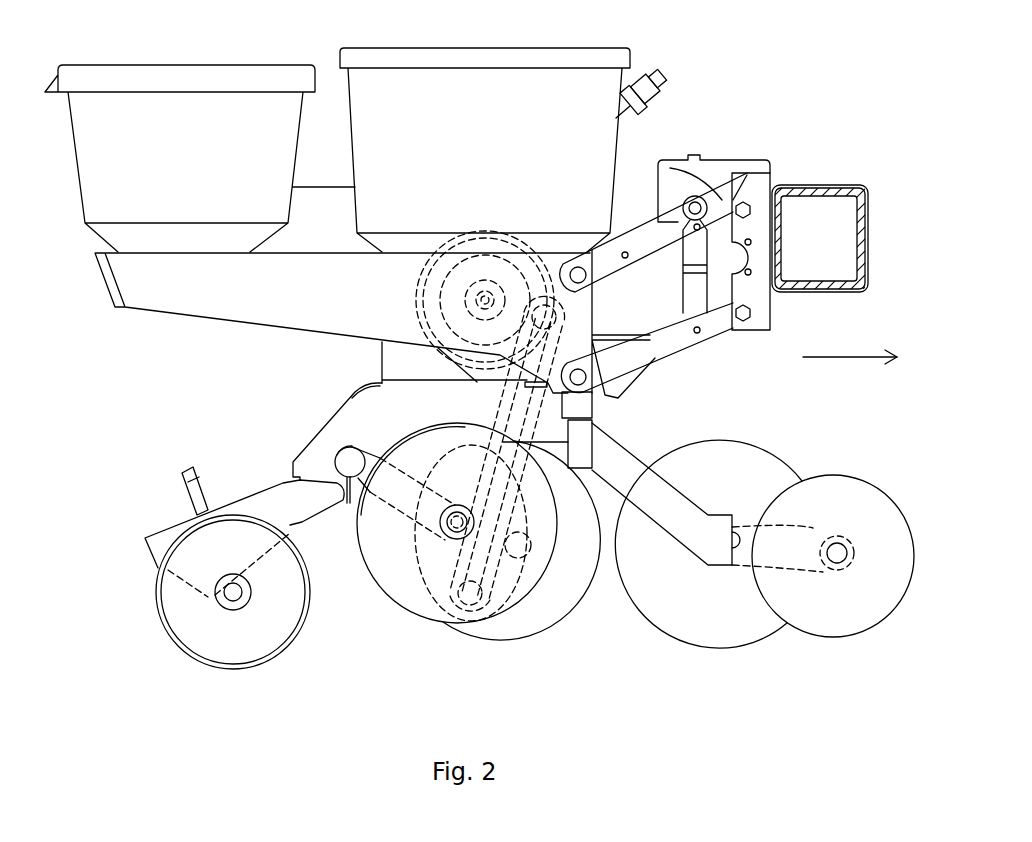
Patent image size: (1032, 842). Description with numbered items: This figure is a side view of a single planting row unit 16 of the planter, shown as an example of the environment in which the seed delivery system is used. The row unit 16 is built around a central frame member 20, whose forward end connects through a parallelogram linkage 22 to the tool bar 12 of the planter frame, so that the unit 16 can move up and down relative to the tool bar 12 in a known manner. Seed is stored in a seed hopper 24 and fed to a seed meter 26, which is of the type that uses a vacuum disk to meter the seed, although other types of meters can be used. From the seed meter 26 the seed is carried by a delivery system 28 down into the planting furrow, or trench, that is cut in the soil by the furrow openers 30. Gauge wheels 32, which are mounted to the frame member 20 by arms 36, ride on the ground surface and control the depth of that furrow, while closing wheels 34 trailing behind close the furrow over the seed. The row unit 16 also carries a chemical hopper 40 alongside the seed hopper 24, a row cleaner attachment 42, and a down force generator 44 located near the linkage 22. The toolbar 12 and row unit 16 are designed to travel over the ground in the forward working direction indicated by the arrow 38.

The tool bar 12 is at (868, 208).
The row unit 16 is at (688, 98).
The central frame member 20 is at (328, 432).
The parallelogram linkage 22 is at (625, 362).
The seed hopper 24 is at (531, 147).
The seed meter 26 is at (523, 243).
The delivery system 28 is at (537, 427).
The furrow openers 30 is at (563, 600).
The gauge wheels 32 is at (402, 585).
The closing wheels 34 is at (180, 637).
The arms 36 is at (412, 472).
The arrow 38 is at (840, 357).
The chemical hopper 40 is at (159, 160).
The row cleaner attachment 42 is at (718, 428).
The down force generator 44 is at (723, 137).